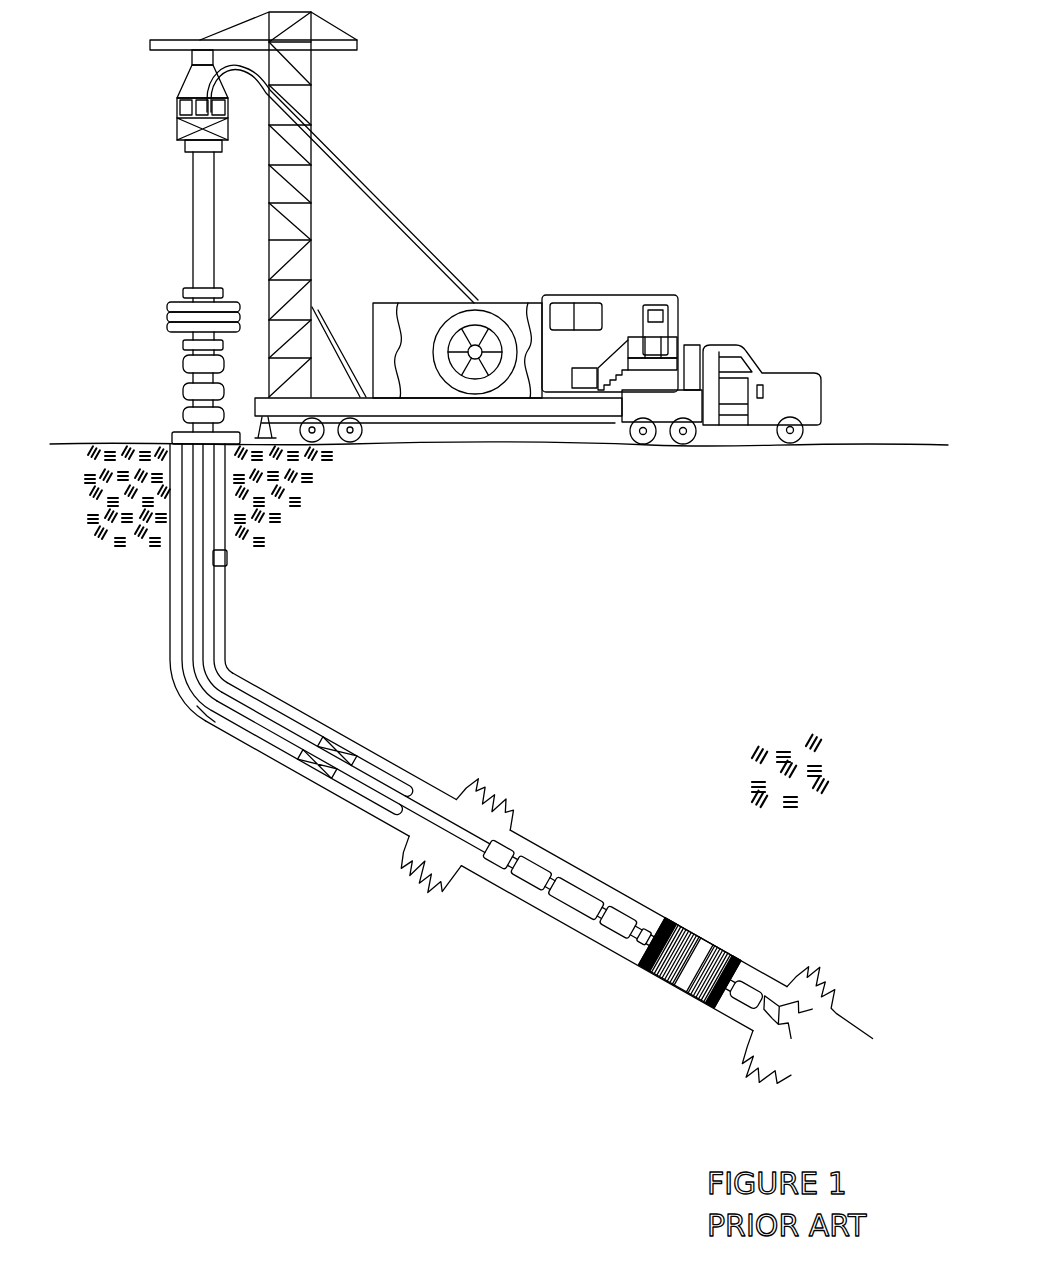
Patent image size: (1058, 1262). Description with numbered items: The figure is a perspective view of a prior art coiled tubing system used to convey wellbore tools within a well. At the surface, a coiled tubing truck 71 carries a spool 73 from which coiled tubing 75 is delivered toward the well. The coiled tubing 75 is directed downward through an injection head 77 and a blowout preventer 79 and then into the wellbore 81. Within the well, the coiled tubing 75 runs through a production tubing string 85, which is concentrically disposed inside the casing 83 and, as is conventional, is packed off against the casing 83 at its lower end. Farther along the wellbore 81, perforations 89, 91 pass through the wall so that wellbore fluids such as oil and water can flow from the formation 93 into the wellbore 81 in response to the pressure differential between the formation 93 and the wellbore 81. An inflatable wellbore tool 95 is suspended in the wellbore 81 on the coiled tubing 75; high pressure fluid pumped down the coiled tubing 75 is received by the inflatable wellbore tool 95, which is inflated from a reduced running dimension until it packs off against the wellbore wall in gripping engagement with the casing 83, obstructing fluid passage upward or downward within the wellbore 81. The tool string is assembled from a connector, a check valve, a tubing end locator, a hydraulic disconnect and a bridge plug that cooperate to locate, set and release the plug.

The coiled tubing truck 71 is at (642, 295).
The spool 73 is at (515, 300).
The coiled tubing 75 is at (362, 172).
The injection head 77 is at (178, 101).
The blowout preventer 79 is at (167, 312).
The wellbore 81 is at (228, 555).
The casing 83 is at (227, 603).
The production tubing string 85 is at (218, 678).
The perforations 89 is at (477, 773).
The perforations 91 is at (826, 980).
The formation 93 is at (835, 760).
The inflatable wellbore tool 95 is at (600, 906).